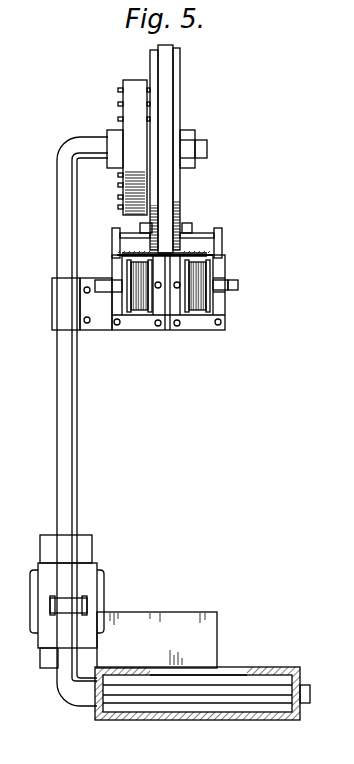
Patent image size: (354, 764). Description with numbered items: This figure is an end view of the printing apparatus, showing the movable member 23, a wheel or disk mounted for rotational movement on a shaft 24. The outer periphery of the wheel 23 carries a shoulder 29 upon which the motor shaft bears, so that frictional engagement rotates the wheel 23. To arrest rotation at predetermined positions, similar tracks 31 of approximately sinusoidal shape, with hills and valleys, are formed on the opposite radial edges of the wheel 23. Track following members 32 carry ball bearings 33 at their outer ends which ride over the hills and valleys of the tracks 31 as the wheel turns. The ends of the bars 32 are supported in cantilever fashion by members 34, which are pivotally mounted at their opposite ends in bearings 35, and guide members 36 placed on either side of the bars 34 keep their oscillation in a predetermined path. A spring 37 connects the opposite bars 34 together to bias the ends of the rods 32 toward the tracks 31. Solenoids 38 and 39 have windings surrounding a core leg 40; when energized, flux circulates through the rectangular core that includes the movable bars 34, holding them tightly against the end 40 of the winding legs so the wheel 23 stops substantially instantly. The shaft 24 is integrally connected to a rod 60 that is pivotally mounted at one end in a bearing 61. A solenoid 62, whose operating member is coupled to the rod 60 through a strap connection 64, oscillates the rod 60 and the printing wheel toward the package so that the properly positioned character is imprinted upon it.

The movable member 23 is at (180, 97).
The shaft 24 is at (210, 148).
The shoulder 29 is at (152, 52).
The tracks 31 is at (180, 212).
The track following members 32 is at (128, 236).
The ball bearings 33 is at (188, 228).
The members 34 is at (114, 257).
The bearings 35 is at (118, 326).
The guide members 36 is at (238, 286).
The spring 37 is at (188, 252).
The solenoid 38 is at (143, 310).
The solenoid 39 is at (205, 310).
The core leg 40 is at (216, 281).
The rod 60 is at (72, 452).
The bearing 61 is at (310, 703).
The solenoid 62 is at (90, 572).
The strap connection 64 is at (78, 603).